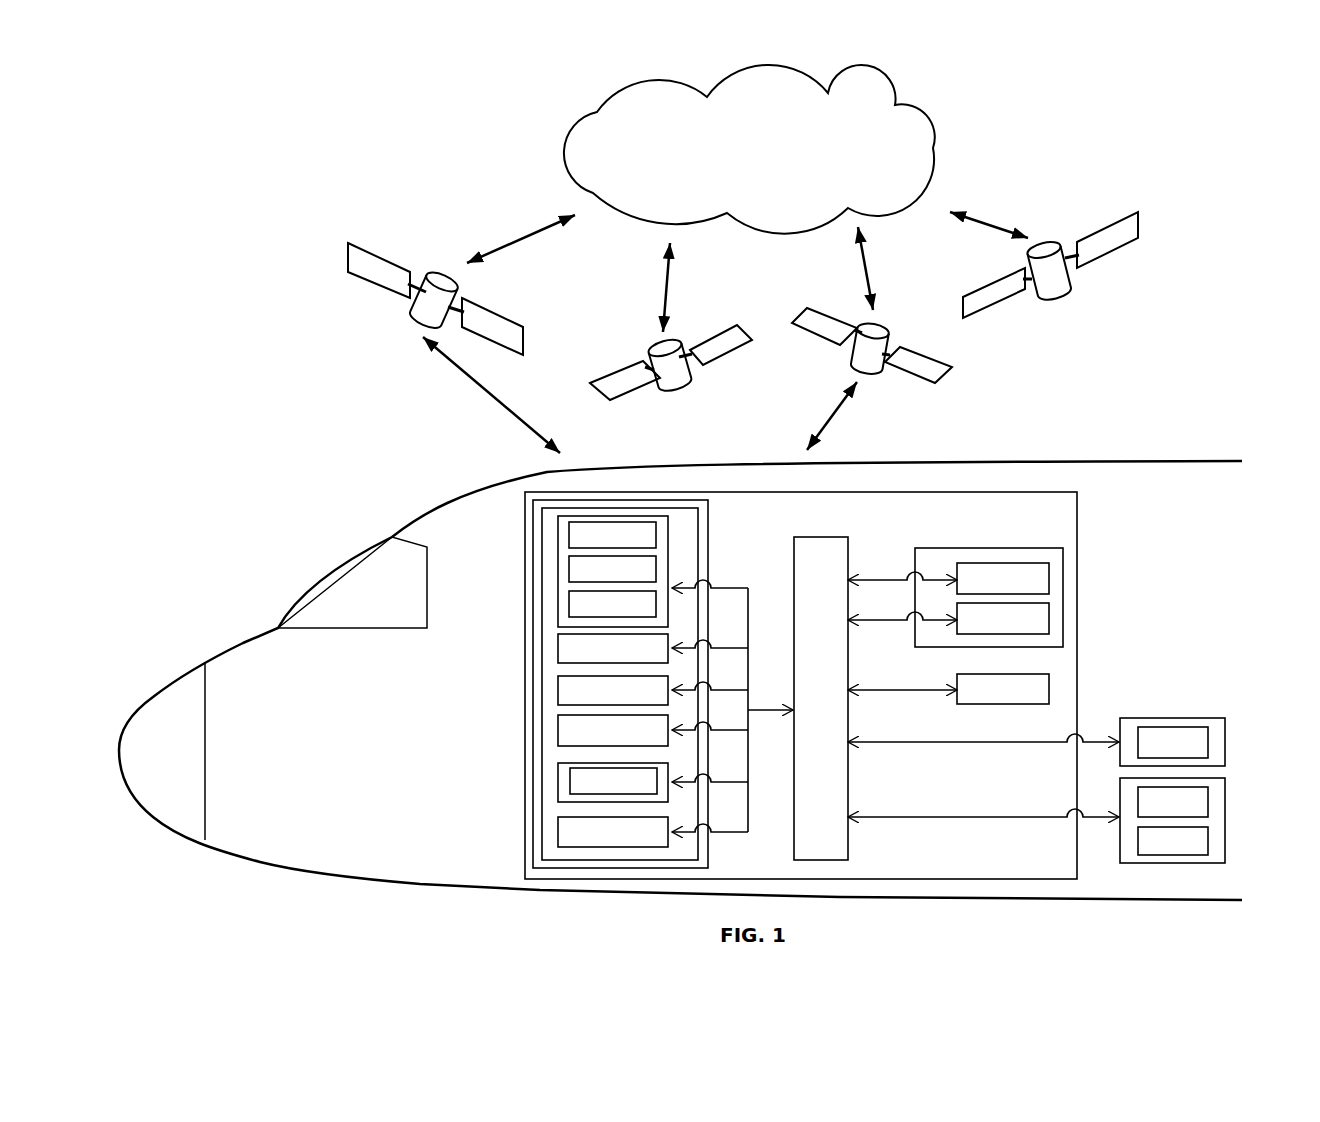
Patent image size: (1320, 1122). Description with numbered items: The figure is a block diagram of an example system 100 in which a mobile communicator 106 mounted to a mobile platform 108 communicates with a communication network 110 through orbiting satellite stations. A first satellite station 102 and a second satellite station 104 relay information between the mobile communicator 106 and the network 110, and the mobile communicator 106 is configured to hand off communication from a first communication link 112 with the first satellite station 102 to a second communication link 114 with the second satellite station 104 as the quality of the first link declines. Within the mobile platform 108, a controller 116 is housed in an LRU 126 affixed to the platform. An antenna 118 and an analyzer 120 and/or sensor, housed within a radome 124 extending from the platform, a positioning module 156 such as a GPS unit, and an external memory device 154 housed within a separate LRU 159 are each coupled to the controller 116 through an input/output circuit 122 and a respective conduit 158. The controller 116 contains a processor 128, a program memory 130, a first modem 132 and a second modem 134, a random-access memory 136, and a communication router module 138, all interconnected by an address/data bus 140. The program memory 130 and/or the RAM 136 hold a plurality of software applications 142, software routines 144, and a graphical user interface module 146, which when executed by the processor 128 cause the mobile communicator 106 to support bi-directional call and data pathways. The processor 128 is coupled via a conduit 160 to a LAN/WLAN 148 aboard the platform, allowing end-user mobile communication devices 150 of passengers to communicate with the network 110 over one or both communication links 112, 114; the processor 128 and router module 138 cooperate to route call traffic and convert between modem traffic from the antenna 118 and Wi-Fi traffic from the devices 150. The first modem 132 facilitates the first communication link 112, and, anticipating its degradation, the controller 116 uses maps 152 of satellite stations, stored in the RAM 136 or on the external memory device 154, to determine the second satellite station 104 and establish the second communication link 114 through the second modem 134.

The system 100 is at (506, 94).
The first satellite station 102 is at (887, 329).
The second satellite station 104 is at (437, 271).
The mobile communicator 106 is at (525, 541).
The mobile platform 108 is at (270, 776).
The communication network 110 is at (732, 164).
The first communication link 112 is at (829, 420).
The second communication link 114 is at (493, 397).
The controller 116 is at (533, 575).
The antenna 118 is at (985, 589).
The analyzer 120 is at (985, 629).
The input/output circuit 122 is at (803, 669).
The radome 124 is at (1063, 593).
The LRU 126 is at (542, 604).
The processor 128 is at (594, 659).
The program memory 130 is at (557, 619).
The first modem 132 is at (594, 701).
The second modem 134 is at (594, 741).
The random-access memory 136 is at (557, 777).
The communication router module 138 is at (594, 843).
The address/data bus 140 is at (714, 586).
The software applications 142 is at (594, 546).
The software routines 144 is at (594, 580).
The graphical user interface module 146 is at (594, 615).
The LAN/WLAN 148 is at (1207, 863).
The end-user mobile communication device 150 is at (1155, 813).
The satellite station maps 152 is at (595, 792).
The external memory device 154 is at (1155, 753).
The positioning module 156 is at (985, 700).
The conduit 158 is at (887, 576).
The LRU 159 is at (1190, 718).
The conduit 160 is at (887, 820).